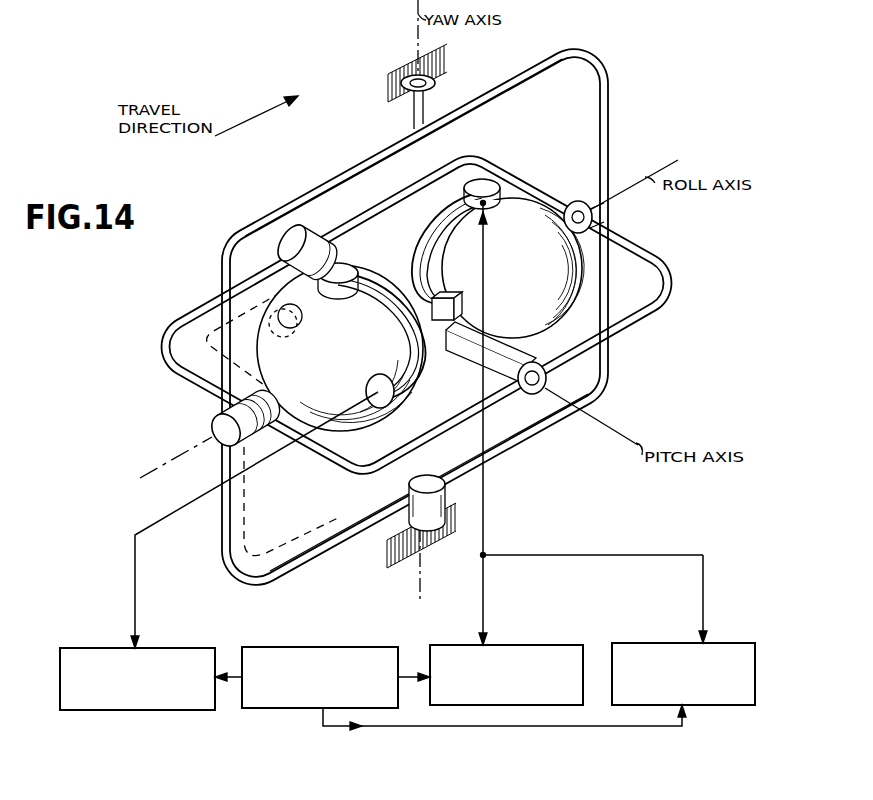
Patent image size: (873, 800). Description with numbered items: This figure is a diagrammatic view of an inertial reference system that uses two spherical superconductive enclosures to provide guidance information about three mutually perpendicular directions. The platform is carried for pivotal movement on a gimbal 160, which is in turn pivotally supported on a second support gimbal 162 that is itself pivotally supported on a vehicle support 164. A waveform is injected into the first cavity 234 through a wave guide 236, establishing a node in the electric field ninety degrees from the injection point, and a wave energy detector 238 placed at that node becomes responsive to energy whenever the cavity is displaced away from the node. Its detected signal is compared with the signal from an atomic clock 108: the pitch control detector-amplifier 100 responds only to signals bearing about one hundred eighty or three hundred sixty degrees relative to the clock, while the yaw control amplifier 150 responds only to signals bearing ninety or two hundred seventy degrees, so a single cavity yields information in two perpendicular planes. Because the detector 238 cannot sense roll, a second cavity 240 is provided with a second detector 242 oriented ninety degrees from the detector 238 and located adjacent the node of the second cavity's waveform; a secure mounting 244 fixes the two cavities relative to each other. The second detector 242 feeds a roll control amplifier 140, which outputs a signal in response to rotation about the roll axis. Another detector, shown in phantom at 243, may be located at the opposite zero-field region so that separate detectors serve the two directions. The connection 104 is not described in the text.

The vehicle support 164 is at (391, 68).
The second support gimbal 162 is at (608, 100).
The gimbal 160 is at (506, 176).
The cavity 234 is at (412, 240).
The wave guide 236 is at (443, 248).
The wave energy detector 238 is at (488, 204).
The second cavity 240 is at (268, 338).
The detector 243 is at (287, 335).
The second detector 242 is at (367, 389).
The secure mounting 244 is at (466, 371).
The roll control amplifier 140 is at (111, 648).
The atomic clock 108 is at (302, 647).
The clock signal line 104 is at (384, 668).
The pitch control detector-amplifier 100 is at (539, 645).
The yaw control amplifier 150 is at (667, 643).